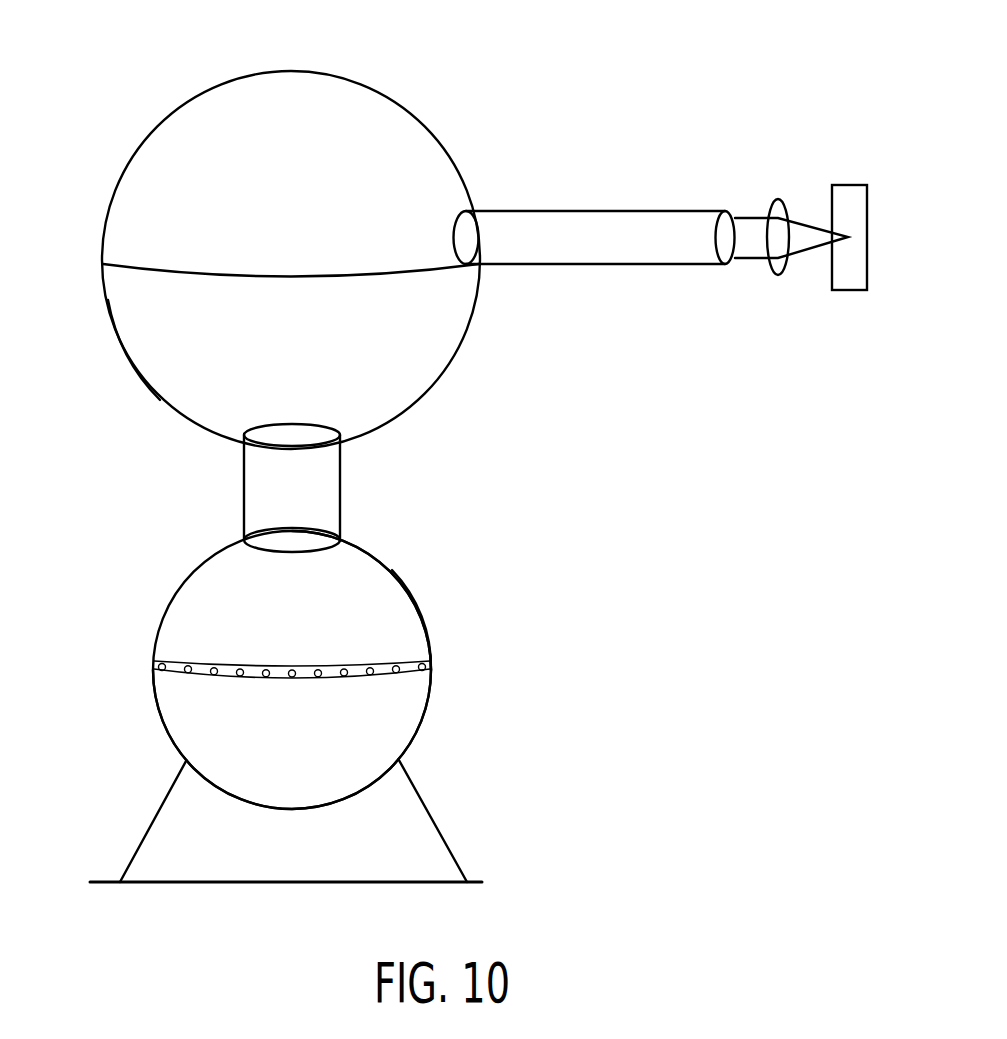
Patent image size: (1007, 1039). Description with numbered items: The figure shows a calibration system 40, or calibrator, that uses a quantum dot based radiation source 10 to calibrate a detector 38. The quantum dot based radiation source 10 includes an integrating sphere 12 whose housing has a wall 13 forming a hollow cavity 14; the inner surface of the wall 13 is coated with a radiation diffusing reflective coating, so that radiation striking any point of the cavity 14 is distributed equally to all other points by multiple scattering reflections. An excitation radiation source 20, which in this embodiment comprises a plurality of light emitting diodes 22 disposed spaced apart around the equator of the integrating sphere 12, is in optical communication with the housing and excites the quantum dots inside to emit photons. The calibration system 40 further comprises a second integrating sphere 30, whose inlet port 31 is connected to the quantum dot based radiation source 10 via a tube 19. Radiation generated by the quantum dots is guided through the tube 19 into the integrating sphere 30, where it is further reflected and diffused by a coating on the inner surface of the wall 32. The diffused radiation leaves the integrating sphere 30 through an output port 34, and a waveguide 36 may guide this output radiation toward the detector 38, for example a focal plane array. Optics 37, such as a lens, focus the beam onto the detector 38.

The quantum dot based radiation source 10 is at (152, 608).
The integrating sphere 12 is at (422, 583).
The wall 13 is at (428, 625).
The hollow cavity 14 is at (369, 765).
The tube 19 is at (340, 495).
The excitation radiation source 20 is at (152, 663).
The light emitting diodes 22 is at (431, 668).
The integrating sphere 30 is at (140, 108).
The inlet port 31 is at (256, 438).
The wall 32 is at (128, 356).
The output port 34 is at (467, 237).
The waveguide 36 is at (586, 265).
The optics 37 is at (778, 276).
The detector 38 is at (846, 291).
The calibration system 40 is at (417, 85).